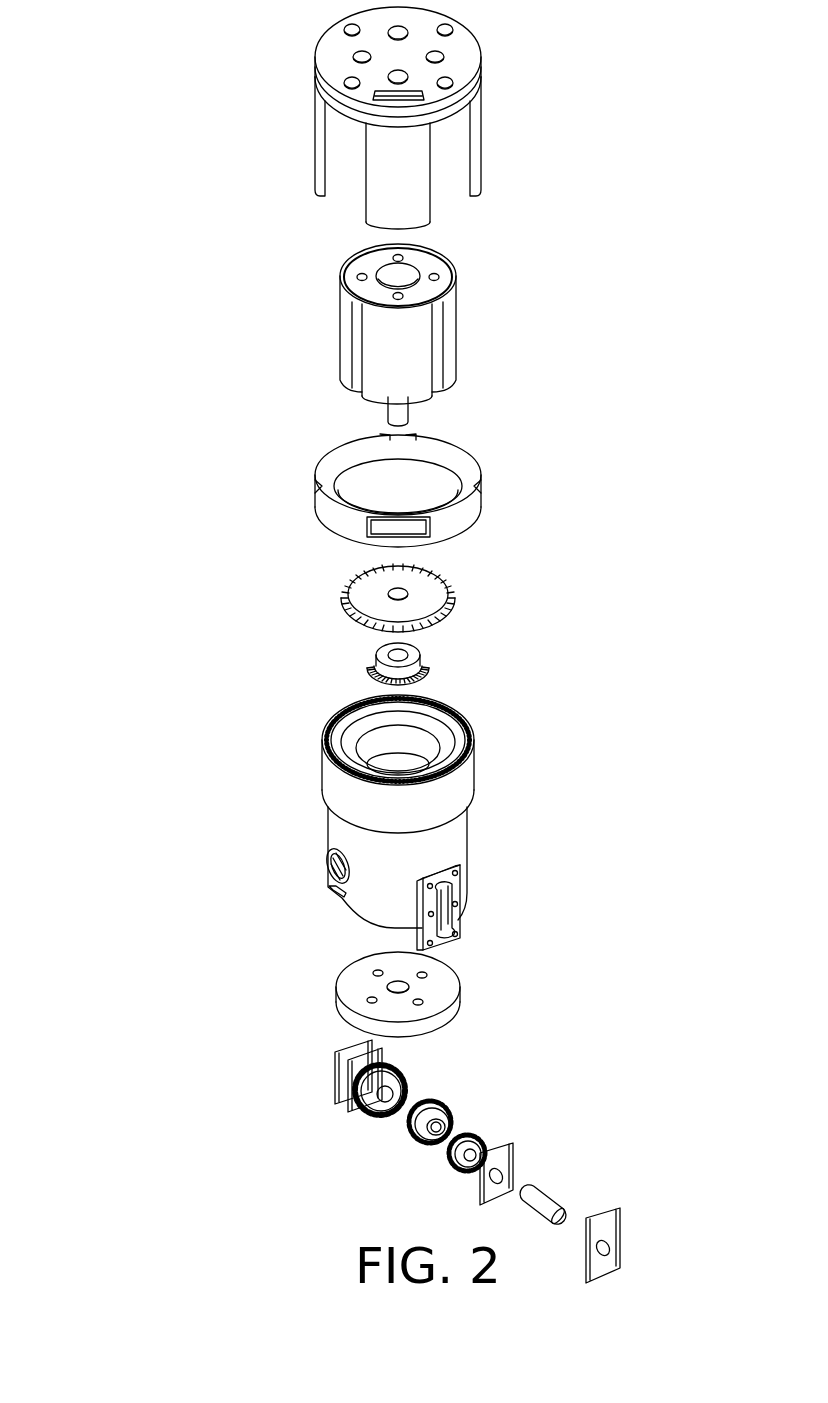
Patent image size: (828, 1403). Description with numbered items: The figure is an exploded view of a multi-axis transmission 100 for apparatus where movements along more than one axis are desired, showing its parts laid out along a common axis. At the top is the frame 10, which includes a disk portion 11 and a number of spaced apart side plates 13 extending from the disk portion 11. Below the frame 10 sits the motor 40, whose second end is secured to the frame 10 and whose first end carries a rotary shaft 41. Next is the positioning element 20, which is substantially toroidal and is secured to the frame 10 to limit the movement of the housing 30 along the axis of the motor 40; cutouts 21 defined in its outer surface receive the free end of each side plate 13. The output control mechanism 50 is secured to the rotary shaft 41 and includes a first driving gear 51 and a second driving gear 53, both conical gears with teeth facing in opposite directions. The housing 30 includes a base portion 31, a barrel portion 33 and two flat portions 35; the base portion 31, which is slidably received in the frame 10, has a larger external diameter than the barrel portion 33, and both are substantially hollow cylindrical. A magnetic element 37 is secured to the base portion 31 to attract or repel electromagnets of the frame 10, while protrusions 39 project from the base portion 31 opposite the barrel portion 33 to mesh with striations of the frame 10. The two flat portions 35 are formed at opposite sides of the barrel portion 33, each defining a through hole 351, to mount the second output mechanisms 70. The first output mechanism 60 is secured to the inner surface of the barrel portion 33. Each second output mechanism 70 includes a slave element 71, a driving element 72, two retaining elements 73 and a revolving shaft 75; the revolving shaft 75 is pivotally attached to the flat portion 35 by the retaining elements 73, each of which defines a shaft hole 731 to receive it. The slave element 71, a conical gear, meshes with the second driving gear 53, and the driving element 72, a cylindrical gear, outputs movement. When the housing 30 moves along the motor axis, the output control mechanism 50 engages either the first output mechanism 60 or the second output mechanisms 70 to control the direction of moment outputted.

The multi-axis transmission 100 is at (170, 63).
The frame 10 is at (574, 52).
The disk portion 11 is at (470, 61).
The side plates 13 is at (483, 138).
The motor 40 is at (452, 343).
The rotary shaft 41 is at (408, 411).
The positioning element 20 is at (486, 518).
The cutouts 21 is at (418, 532).
The output control mechanism 50 is at (584, 610).
The first driving gear 51 is at (428, 608).
The second driving gear 53 is at (418, 670).
The housing 30 is at (594, 800).
The base portion 31 is at (462, 795).
The barrel portion 33 is at (455, 848).
The flat portions 35 is at (458, 918).
The through hole 351 is at (440, 936).
The magnetic element 37 is at (462, 728).
The protrusions 39 is at (480, 755).
The first output mechanism 60 is at (440, 1003).
The second output mechanisms 70 is at (335, 1074).
The slave element 71 is at (450, 1118).
The driving element 72 is at (478, 1133).
The retaining elements 73 is at (513, 1158).
The shaft hole 731 is at (483, 1180).
The revolving shaft 75 is at (550, 1211).